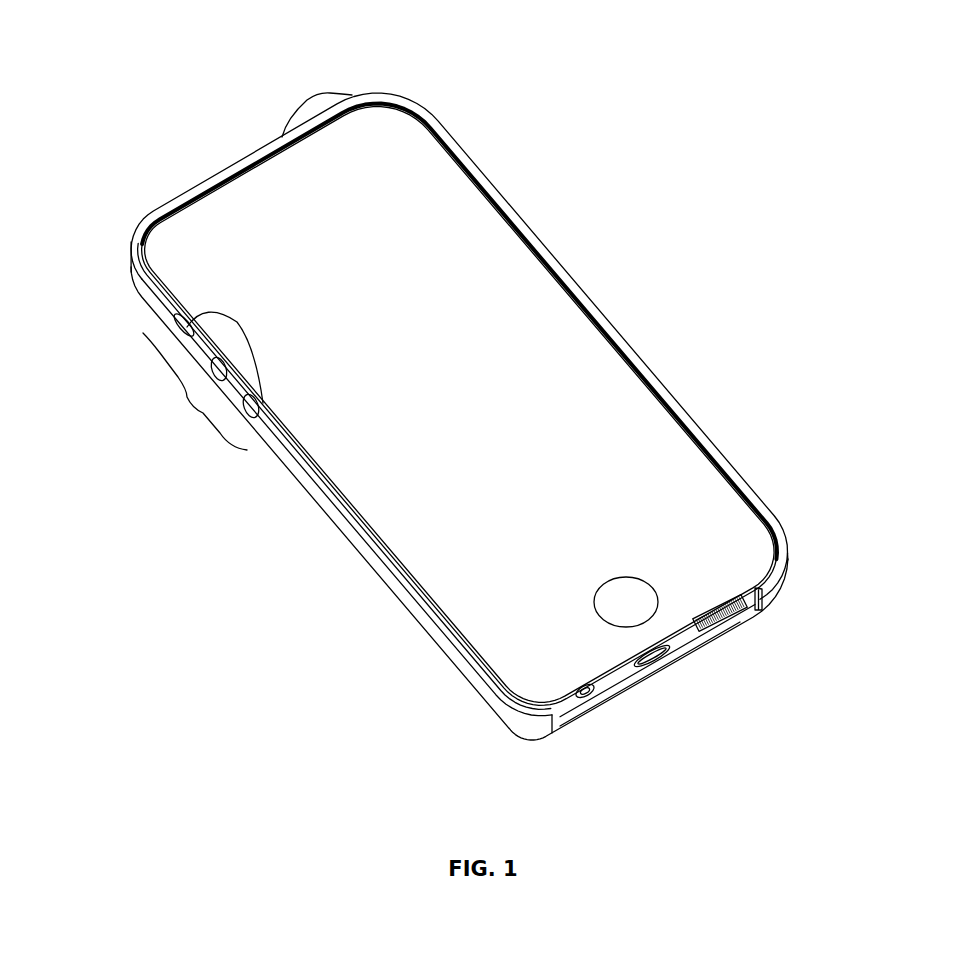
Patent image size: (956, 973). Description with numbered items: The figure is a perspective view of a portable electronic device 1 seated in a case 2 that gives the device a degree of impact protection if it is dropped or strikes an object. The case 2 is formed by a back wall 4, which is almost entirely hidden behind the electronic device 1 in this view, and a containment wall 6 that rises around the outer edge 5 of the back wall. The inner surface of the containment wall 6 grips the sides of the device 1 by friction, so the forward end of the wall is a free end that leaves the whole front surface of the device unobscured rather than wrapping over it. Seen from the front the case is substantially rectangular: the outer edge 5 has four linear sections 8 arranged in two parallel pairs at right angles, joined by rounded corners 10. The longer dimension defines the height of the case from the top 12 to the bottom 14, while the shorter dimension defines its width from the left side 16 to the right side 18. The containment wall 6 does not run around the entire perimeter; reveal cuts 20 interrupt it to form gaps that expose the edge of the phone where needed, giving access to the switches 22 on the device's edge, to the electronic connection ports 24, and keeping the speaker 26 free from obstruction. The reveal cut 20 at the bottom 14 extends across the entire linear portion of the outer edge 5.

The portable electronic device 1 is at (488, 277).
The case 2 is at (368, 604).
The back wall 4 is at (673, 657).
The outer edge 5 is at (663, 660).
The containment wall 6 is at (705, 447).
The linear sections 8 is at (232, 166).
The rounded corners 10 is at (126, 286).
The top 12 is at (209, 84).
The bottom 14 is at (746, 739).
The left side 16 is at (204, 553).
The right side 18 is at (609, 285).
The reveal cuts 20 is at (312, 106).
The switches 22 is at (238, 323).
The electronic connection ports 24 is at (641, 668).
The speaker 26 is at (723, 617).